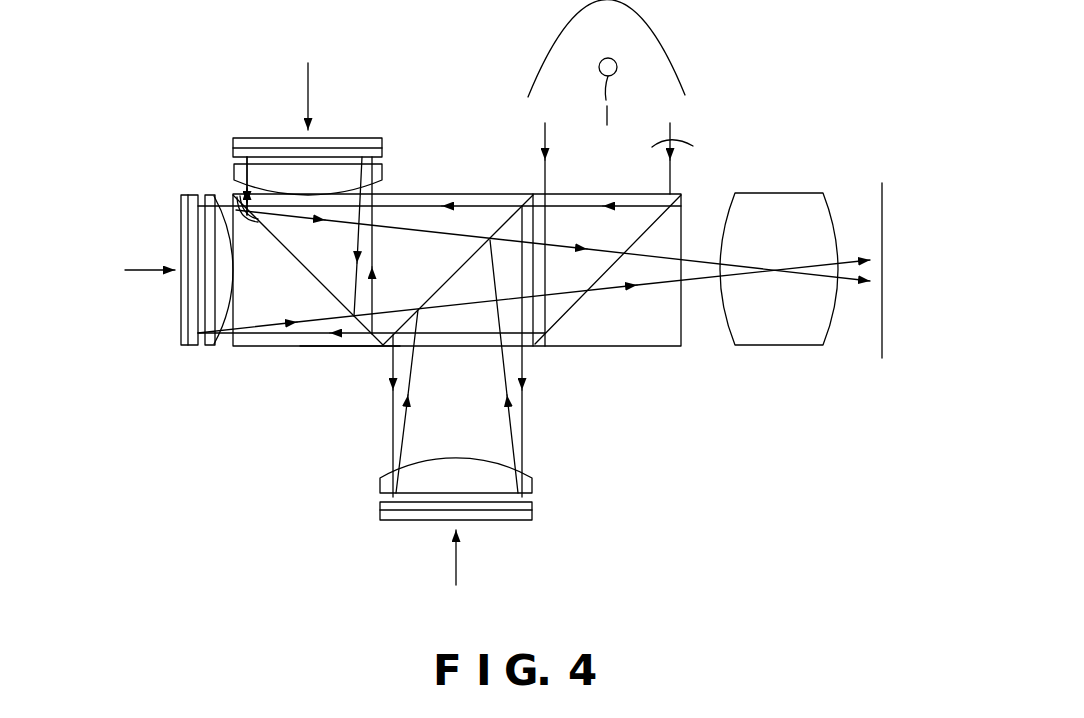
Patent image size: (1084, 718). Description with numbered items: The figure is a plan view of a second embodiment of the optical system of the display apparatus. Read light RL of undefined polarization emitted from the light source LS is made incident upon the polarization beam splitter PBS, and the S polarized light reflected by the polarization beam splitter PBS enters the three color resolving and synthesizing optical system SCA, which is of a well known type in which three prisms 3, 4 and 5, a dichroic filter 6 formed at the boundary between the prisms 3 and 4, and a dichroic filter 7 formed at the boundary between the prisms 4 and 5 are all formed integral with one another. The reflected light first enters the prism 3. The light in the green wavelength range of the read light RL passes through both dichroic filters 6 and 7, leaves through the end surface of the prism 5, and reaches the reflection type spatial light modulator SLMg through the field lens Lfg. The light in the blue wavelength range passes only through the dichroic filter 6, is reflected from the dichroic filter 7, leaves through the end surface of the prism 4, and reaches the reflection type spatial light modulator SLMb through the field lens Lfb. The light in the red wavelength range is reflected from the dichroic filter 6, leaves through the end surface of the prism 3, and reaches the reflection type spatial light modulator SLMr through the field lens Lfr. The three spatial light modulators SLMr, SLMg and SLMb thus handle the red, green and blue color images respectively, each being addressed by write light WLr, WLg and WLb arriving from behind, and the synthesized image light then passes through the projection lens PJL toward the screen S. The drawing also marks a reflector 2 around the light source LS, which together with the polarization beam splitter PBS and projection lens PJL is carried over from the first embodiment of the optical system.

The reflector 2 is at (551, 33).
The prism 3 is at (443, 340).
The prism 4 is at (467, 198).
The prism 5 is at (282, 340).
The dichroic filter 6 is at (507, 215).
The dichroic filter 7 is at (236, 208).
The light source LS is at (668, 27).
The read light RL is at (696, 158).
The screen S is at (884, 200).
The blue write light WLb is at (304, 79).
The reflection type spatial light modulator SLMb is at (360, 130).
The field lens Lfb is at (376, 172).
The green write light WLg is at (141, 247).
The reflection type spatial light modulator SLMg is at (180, 352).
The field lens Lfg is at (213, 347).
The three color resolving and synthesizing optical system SCA is at (347, 353).
The polarization beam splitter PBS is at (585, 353).
The projection lens PJL is at (778, 350).
The field lens Lfr is at (533, 484).
The reflection type spatial light modulator SLMr is at (405, 522).
The red write light WLr is at (451, 574).